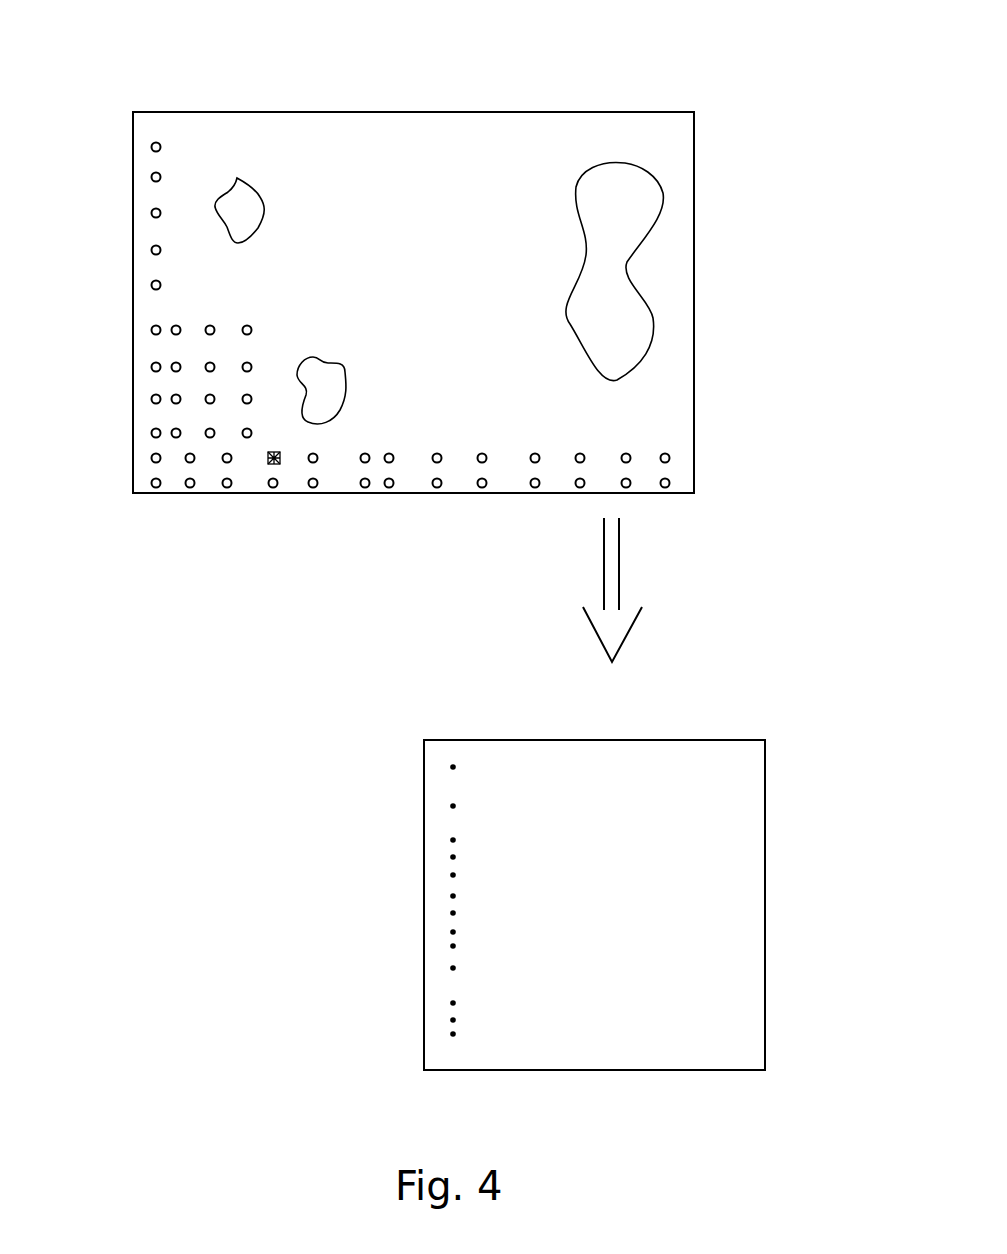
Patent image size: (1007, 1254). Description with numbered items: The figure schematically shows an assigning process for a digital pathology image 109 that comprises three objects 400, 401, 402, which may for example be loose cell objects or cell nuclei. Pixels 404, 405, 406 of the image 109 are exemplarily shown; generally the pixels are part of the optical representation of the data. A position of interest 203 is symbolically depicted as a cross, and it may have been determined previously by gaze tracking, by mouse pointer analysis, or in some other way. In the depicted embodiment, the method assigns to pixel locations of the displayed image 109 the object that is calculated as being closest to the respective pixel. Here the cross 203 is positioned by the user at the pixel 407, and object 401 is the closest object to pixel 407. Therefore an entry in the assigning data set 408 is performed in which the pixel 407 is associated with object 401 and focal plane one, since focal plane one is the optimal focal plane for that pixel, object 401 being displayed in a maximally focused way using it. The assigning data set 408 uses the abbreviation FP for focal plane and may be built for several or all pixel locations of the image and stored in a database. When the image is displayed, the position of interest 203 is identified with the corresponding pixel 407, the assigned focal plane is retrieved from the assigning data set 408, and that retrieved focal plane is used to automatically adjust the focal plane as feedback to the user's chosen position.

The digital pathology image 109 is at (693, 330).
The position of interest 203 is at (271, 463).
The object 400 is at (238, 177).
The object 401 is at (330, 362).
The object 402 is at (625, 163).
The pixel 404 is at (670, 482).
The pixel 405 is at (158, 488).
The pixel 406 is at (151, 400).
The pixel 407 is at (283, 463).
The assigning data set 408 is at (722, 1071).